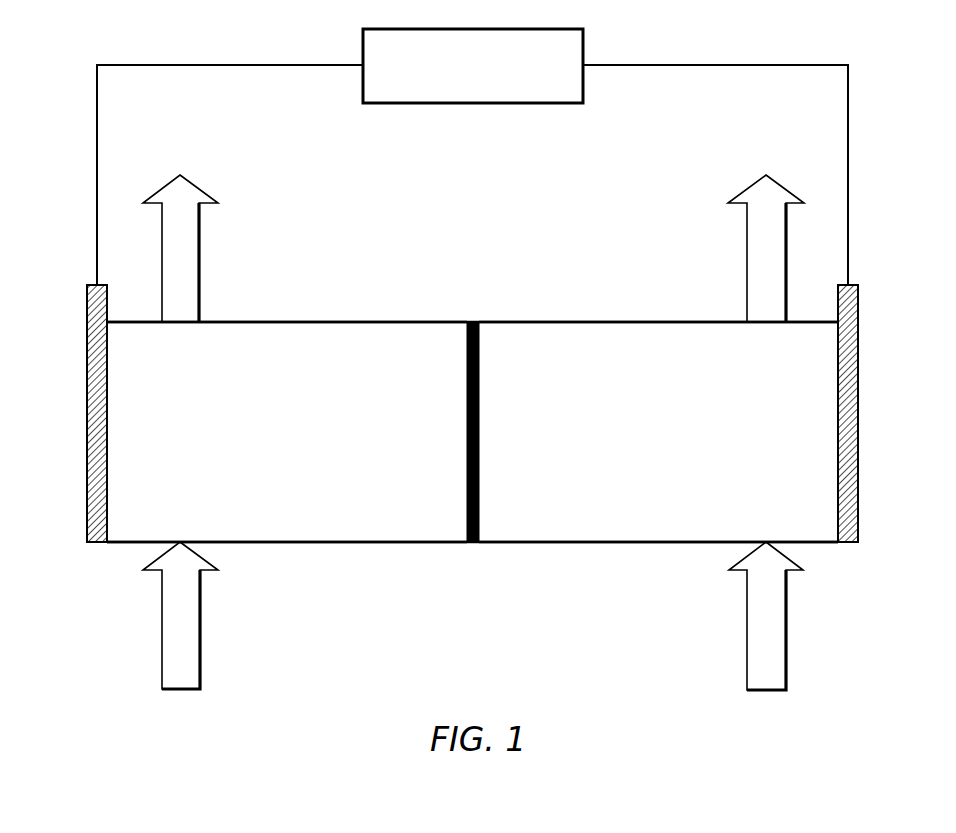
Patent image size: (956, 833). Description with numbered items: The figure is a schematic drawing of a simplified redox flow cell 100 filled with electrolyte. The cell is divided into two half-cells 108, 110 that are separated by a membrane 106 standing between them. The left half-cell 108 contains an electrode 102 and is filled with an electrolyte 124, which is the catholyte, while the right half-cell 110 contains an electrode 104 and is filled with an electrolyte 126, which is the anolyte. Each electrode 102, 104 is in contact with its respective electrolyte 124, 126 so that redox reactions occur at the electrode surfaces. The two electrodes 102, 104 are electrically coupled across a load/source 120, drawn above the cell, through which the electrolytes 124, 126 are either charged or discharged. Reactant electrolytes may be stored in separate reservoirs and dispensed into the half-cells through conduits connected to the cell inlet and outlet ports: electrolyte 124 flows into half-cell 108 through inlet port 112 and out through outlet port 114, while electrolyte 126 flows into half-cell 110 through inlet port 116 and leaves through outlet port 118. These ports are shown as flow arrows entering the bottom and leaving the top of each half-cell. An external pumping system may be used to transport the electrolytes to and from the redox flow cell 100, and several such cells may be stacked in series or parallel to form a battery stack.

The redox flow cell 100 is at (62, 322).
The electrode 102 is at (105, 418).
The electrode 104 is at (845, 402).
The membrane 106 is at (472, 322).
The half-cell 108 is at (322, 333).
The half-cell 110 is at (595, 335).
The inlet port 112 is at (202, 626).
The outlet port 114 is at (200, 254).
The inlet port 116 is at (787, 626).
The outlet port 118 is at (747, 240).
The load/source 120 is at (452, 91).
The electrolyte 124 is at (431, 524).
The electrolyte 126 is at (551, 524).